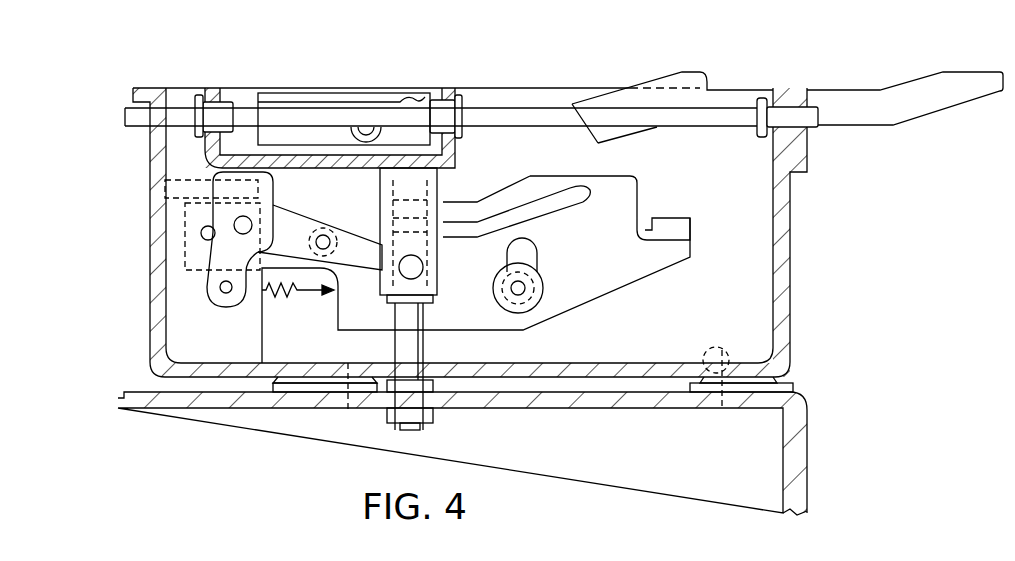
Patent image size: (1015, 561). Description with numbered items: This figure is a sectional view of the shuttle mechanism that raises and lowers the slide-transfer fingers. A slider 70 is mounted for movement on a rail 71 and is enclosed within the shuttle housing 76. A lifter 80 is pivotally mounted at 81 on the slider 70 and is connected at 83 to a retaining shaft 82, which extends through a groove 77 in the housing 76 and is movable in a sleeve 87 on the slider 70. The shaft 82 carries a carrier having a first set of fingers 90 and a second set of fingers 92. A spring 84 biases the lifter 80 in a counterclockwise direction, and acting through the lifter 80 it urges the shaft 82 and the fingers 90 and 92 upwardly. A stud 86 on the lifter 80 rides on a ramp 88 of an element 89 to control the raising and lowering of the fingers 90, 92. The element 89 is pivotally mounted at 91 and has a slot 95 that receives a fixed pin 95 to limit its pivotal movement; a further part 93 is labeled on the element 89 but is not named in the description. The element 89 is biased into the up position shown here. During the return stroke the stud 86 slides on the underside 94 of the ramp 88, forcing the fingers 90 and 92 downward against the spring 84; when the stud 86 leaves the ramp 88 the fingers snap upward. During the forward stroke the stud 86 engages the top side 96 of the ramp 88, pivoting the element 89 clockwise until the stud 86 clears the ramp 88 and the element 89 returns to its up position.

The slider 70 is at (447, 90).
The rail 71 is at (722, 118).
The shuttle housing 76 is at (133, 88).
The groove 77 is at (707, 348).
The lifter 80 is at (303, 214).
The pivot 81 is at (222, 221).
The retaining shaft 82 is at (427, 339).
The connection 83 is at (433, 303).
The spring 84 is at (296, 300).
The stud 86 is at (342, 251).
The sleeve 87 is at (442, 251).
The ramp 88 is at (559, 199).
The element 89 is at (643, 293).
The first set of fingers 90 is at (692, 72).
The pivot mounting 91 is at (195, 242).
The second set of fingers 92 is at (959, 72).
The roller 93 is at (524, 292).
The underside of ramp 94 is at (545, 212).
The slot and fixed pin 95 is at (538, 259).
The top side of ramp 96 is at (507, 206).